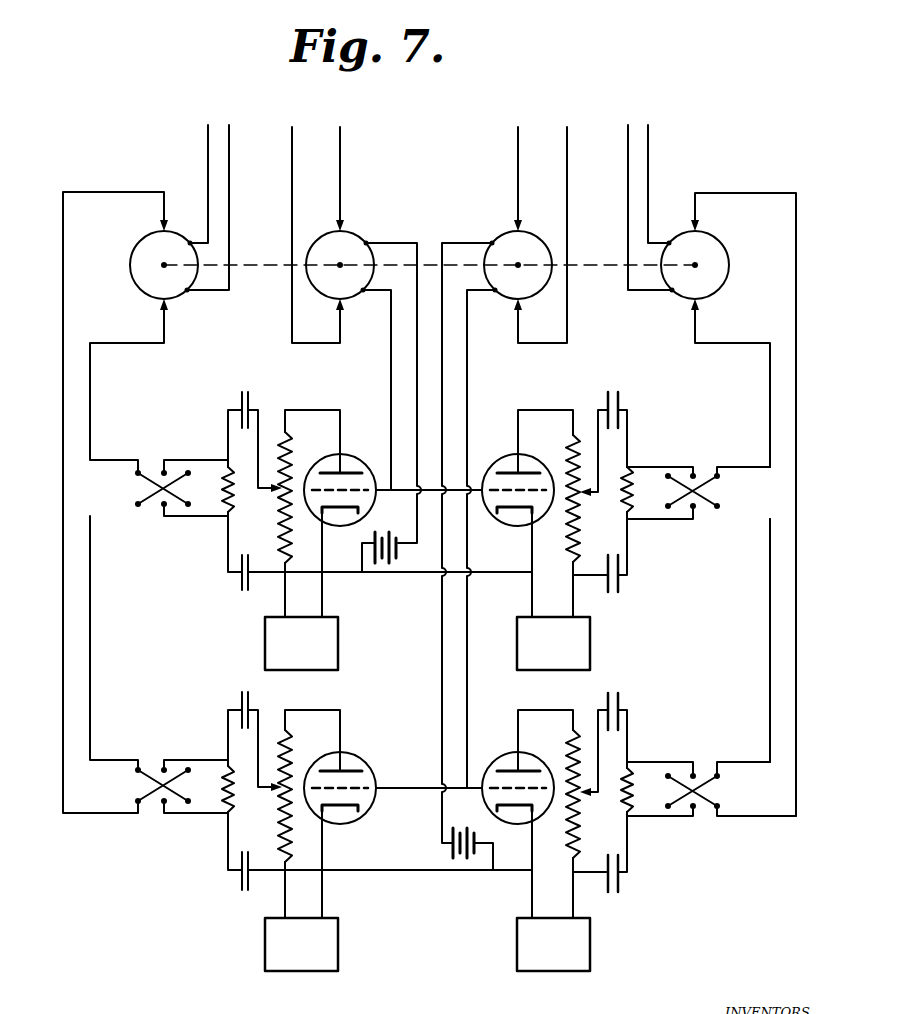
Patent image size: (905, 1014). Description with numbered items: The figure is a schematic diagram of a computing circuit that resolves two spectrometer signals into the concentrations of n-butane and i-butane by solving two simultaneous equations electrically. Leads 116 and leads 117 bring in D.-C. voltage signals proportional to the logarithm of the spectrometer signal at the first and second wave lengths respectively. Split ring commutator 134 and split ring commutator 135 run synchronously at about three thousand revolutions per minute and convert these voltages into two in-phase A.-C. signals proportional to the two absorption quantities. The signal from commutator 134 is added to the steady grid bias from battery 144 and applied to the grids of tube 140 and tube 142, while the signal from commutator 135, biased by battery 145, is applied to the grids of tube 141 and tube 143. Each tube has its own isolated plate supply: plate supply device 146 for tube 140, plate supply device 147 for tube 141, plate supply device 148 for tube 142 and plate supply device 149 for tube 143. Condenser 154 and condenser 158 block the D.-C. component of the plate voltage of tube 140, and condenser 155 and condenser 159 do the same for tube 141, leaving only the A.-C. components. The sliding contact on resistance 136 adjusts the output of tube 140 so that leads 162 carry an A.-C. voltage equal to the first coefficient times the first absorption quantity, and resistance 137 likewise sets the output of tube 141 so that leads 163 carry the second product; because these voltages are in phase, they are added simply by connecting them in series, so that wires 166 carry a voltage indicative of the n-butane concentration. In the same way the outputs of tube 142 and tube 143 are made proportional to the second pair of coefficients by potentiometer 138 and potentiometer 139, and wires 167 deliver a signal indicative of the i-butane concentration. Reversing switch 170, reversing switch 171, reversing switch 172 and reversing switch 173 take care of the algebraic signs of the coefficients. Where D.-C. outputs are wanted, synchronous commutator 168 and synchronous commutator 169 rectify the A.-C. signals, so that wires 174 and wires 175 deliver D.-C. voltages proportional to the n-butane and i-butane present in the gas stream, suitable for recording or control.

The leads 116 is at (341, 127).
The leads 117 is at (567, 127).
The split ring commutator 134 is at (340, 265).
The split ring commutator 135 is at (518, 265).
The resistance 136 is at (582, 514).
The resistance 137 is at (582, 810).
The potentiometer 138 is at (283, 496).
The potentiometer 139 is at (283, 797).
The tube 140 is at (506, 461).
The tube 141 is at (506, 759).
The tube 142 is at (362, 451).
The tube 143 is at (358, 759).
The battery 144 is at (372, 532).
The battery 145 is at (450, 852).
The plate supply device 146 is at (553, 643).
The plate supply device 147 is at (553, 944).
The plate supply device 148 is at (301, 643).
The plate supply device 149 is at (301, 944).
The condenser 154 is at (616, 391).
The condenser 155 is at (612, 692).
The condenser 158 is at (612, 594).
The condenser 159 is at (612, 896).
The leads 162 is at (734, 468).
The leads 163 is at (748, 765).
The wires 166 is at (782, 350).
The wires 167 is at (93, 350).
The synchronous commutator 168 is at (695, 265).
The synchronous commutator 169 is at (164, 265).
The reversing switch 170 is at (702, 508).
The reversing switch 171 is at (700, 812).
The reversing switch 172 is at (152, 508).
The reversing switch 173 is at (152, 806).
The wires 174 is at (639, 124).
The wires 175 is at (217, 124).